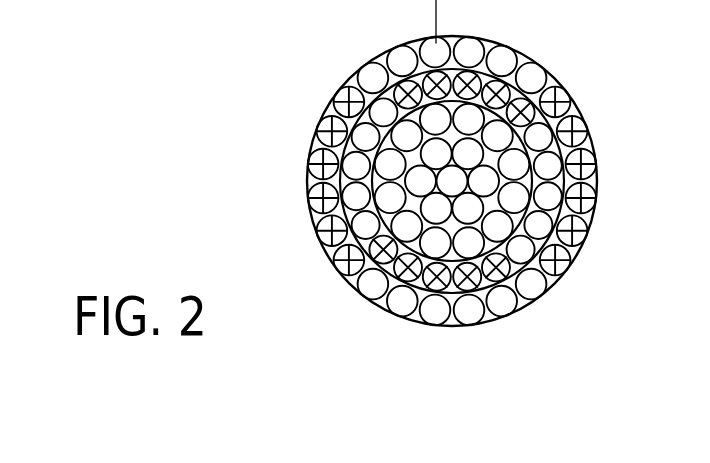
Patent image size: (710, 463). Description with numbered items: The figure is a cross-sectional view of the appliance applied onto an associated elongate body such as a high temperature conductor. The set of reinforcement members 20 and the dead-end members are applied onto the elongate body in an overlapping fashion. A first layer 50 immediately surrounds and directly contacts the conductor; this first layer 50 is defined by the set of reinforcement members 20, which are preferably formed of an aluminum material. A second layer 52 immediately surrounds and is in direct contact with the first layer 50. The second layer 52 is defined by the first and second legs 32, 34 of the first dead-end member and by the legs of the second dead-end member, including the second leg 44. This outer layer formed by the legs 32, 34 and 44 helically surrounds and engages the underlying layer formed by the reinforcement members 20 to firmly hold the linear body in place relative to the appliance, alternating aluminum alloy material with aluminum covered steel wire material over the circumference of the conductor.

The reinforcement members 20 is at (503, 92).
The first leg of first dead-end member 32 is at (592, 163).
The second leg of first dead-end member 34 is at (315, 192).
The second leg of second dead-end member 44 is at (469, 318).
The first layer 50 is at (532, 82).
The second layer 52 is at (382, 303).